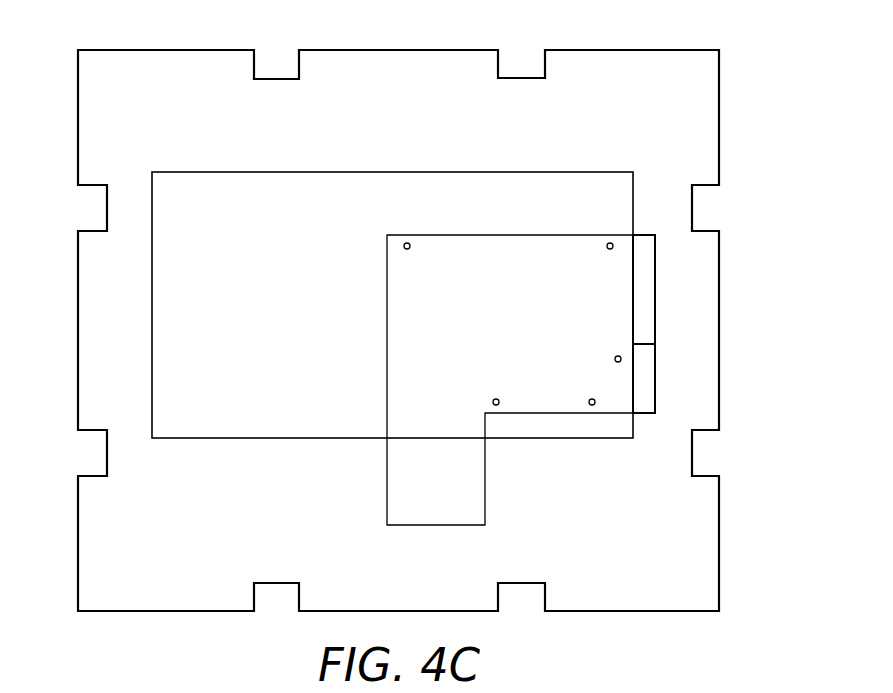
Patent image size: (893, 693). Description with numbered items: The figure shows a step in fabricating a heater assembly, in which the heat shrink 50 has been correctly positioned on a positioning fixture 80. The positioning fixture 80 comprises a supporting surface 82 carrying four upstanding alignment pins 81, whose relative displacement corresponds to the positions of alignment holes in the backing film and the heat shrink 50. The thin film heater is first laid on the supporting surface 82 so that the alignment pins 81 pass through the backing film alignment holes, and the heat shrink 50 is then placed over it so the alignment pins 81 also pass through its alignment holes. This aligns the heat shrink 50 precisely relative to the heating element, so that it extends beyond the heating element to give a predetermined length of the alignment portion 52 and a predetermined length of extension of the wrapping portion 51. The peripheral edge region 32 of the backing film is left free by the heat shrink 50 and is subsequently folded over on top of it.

The positioning fixture 80 is at (100, 133).
The supporting surface 82 is at (165, 61).
The heat shrink 50 is at (201, 181).
The peripheral edge region 32 is at (643, 270).
The alignment pins 81 is at (407, 250).
The wrapping portion 51 is at (387, 299).
The alignment portion 52 is at (499, 172).